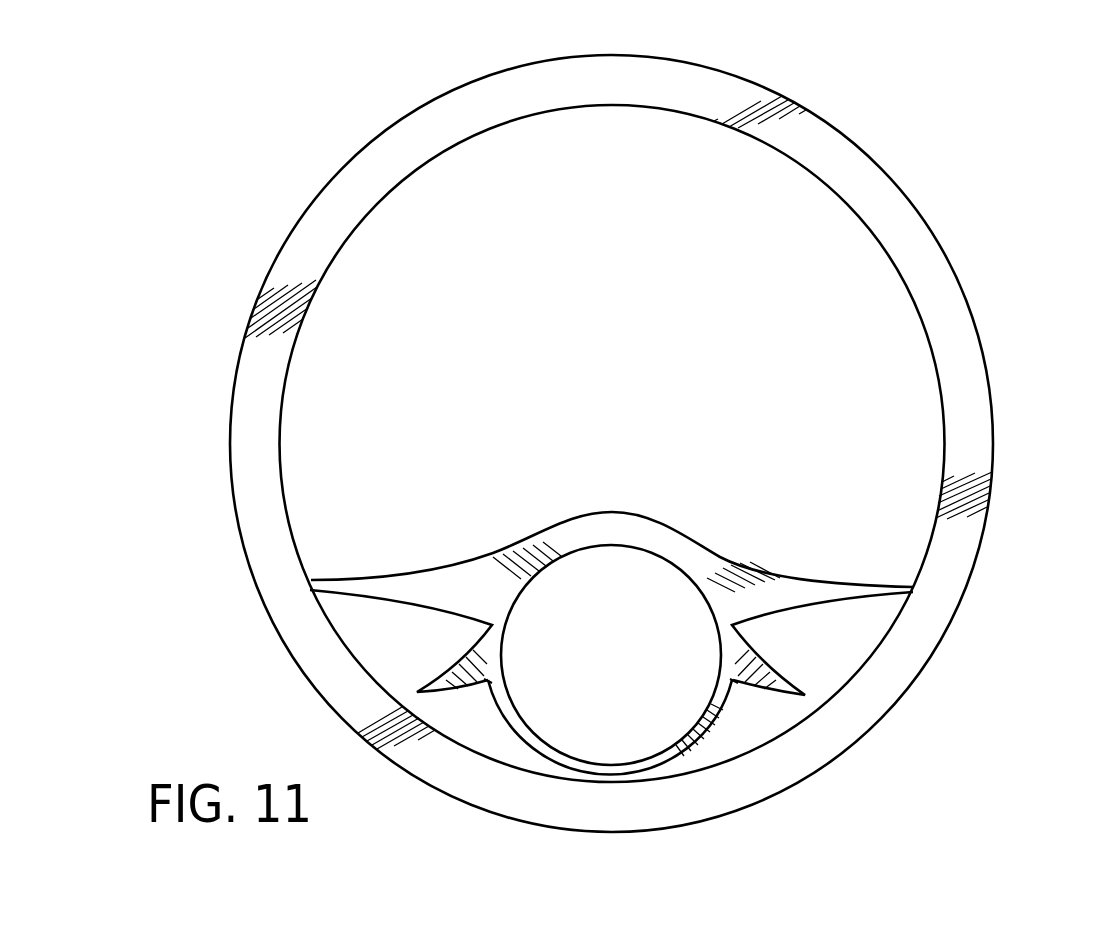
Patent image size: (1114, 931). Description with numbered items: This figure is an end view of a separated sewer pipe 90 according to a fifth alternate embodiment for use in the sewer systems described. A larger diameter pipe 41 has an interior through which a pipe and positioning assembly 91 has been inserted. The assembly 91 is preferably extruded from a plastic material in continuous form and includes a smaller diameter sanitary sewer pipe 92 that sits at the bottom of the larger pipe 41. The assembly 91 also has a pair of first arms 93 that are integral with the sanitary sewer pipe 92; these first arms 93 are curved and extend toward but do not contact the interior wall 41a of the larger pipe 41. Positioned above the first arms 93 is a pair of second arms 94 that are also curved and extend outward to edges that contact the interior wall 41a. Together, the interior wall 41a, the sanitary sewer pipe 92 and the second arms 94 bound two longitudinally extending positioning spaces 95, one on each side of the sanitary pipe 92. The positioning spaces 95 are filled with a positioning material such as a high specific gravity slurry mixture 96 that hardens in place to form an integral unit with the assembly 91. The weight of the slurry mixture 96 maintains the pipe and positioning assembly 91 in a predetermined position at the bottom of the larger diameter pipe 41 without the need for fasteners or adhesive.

The separated sewer pipe 90 is at (960, 165).
The larger diameter pipe 41 is at (661, 443).
The interior wall 41a is at (338, 210).
The pipe and positioning assembly 91 is at (735, 521).
The smaller diameter sanitary sewer pipe 92 is at (668, 755).
The first arms 93 is at (460, 670).
The second arms 94 is at (348, 585).
The positioning spaces 95 is at (488, 742).
The slurry mixture 96 is at (484, 728).